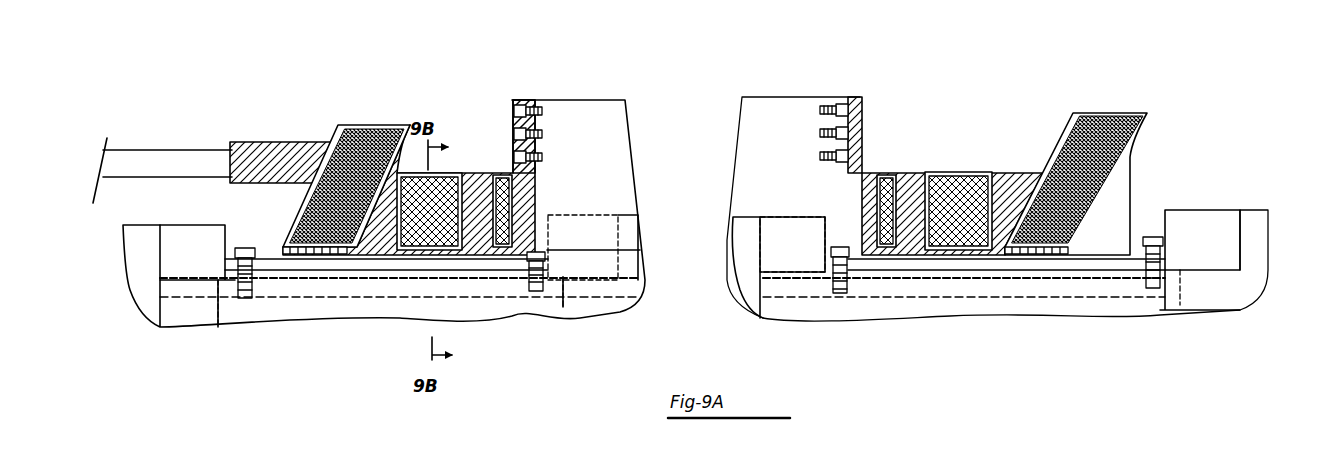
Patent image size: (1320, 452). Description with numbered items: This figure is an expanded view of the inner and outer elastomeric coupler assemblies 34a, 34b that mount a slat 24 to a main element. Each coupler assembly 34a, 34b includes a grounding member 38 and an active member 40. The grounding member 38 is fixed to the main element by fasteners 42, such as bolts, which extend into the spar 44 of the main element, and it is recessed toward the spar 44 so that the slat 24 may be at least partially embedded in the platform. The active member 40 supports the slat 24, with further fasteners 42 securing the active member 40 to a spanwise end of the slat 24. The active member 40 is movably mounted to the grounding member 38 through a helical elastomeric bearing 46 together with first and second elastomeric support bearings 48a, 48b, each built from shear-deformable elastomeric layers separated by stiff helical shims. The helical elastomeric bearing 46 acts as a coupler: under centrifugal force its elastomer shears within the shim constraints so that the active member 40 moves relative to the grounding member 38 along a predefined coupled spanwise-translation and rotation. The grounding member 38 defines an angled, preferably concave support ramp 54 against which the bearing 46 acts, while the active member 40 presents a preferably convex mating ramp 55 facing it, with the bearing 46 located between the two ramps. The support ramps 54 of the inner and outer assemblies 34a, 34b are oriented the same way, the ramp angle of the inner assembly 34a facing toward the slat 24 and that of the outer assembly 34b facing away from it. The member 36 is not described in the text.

The slat 24 is at (612, 100).
The inner elastomeric coupler assembly 34a is at (278, 100).
The outer elastomeric coupler assembly 34b is at (1035, 98).
The workpiece / bar 36 is at (144, 158).
The grounding member 38 is at (378, 262).
The active member 40 is at (525, 100).
The fasteners 42 is at (545, 110).
The spar 44 is at (330, 290).
The helical elastomeric bearing 46 is at (356, 125).
The first elastomeric support bearing 48a is at (440, 173).
The second elastomeric support bearing 48b is at (520, 188).
The support ramp 54 is at (410, 125).
The mating ramp 55 is at (300, 218).